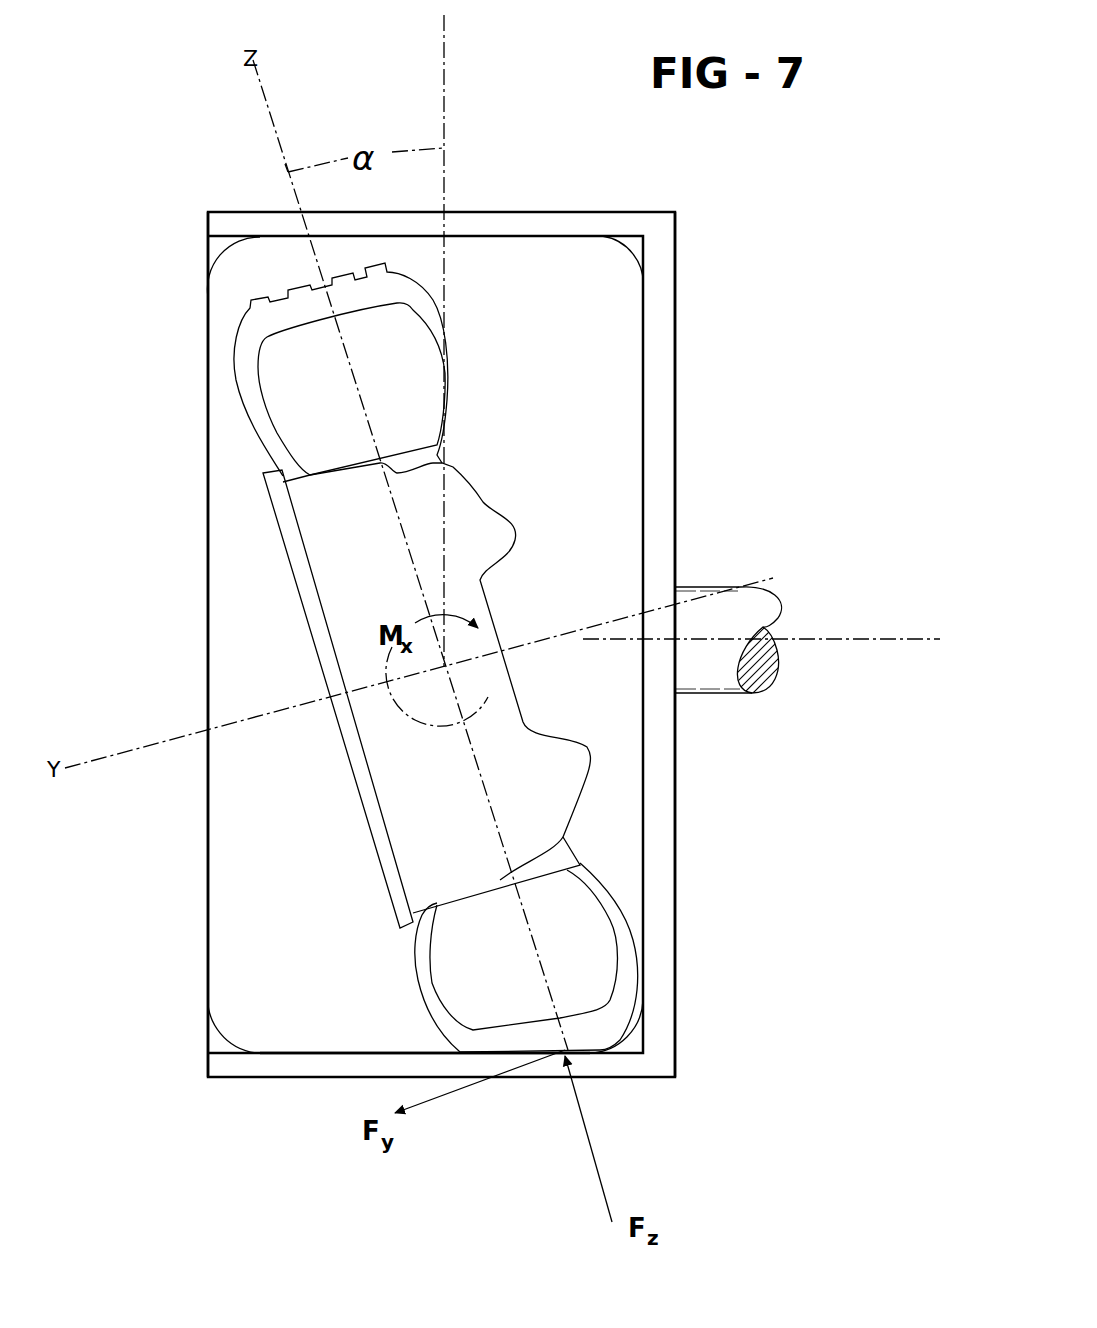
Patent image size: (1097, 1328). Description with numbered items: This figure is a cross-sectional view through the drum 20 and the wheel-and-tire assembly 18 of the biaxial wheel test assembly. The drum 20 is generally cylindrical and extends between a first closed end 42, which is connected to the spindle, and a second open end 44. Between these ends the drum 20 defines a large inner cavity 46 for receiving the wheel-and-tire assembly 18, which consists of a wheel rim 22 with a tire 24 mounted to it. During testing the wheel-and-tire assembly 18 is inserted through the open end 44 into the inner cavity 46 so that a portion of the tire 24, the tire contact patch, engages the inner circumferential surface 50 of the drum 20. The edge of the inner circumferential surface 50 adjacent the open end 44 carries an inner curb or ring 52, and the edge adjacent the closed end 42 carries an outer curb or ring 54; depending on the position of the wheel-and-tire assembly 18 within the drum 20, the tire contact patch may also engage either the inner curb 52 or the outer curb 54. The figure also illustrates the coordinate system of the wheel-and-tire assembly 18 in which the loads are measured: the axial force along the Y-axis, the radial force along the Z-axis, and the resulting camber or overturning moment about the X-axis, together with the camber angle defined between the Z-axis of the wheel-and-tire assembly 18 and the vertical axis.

The wheel-and-tire assembly 18 is at (238, 458).
The drum 20 is at (587, 222).
The wheel rim 22 is at (487, 520).
The tire 24 is at (245, 357).
The first closed end 42 is at (675, 318).
The second open end 44 is at (208, 630).
The inner cavity 46 is at (250, 903).
The inner circumferential surface 50 is at (372, 1053).
The inner curb 52 is at (228, 1030).
The outer curb 54 is at (620, 250).